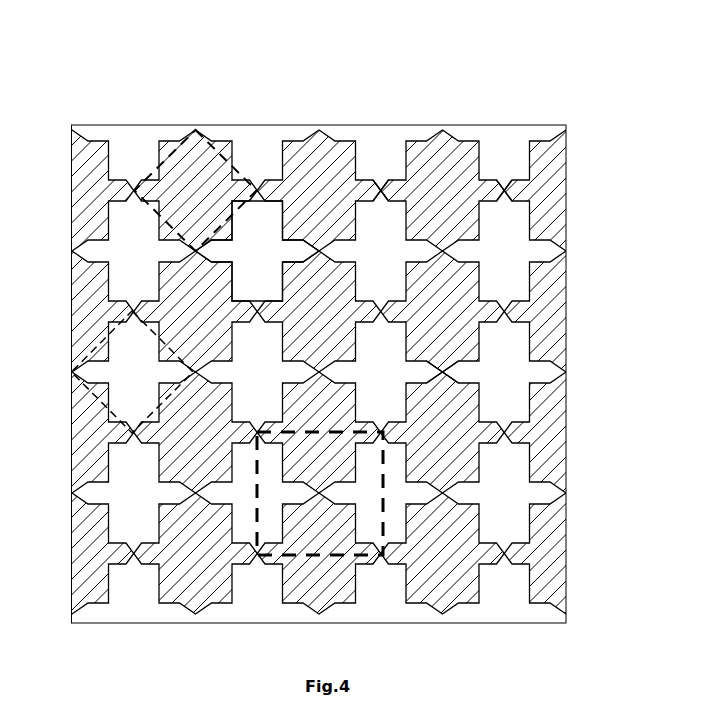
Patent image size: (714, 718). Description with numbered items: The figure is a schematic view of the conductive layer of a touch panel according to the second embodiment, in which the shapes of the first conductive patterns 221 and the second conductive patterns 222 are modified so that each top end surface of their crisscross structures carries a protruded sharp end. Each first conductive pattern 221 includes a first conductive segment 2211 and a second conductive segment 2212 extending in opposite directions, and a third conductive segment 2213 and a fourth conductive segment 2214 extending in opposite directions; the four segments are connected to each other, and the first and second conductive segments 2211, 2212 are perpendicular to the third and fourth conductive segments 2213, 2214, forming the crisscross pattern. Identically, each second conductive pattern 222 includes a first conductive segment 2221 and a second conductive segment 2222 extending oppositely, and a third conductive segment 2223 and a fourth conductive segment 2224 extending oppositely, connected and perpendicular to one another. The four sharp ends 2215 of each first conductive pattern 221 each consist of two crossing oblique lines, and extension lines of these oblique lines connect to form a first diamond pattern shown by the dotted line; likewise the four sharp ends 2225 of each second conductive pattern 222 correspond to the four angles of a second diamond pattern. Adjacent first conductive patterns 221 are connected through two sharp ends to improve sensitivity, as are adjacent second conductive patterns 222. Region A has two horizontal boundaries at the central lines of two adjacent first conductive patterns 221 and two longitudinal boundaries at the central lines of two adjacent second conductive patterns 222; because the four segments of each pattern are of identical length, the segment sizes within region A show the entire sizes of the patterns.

The first conductive pattern 221 is at (193, 181).
The second conductive pattern 222 is at (266, 251).
The first conductive segment 2211 is at (442, 161).
The second conductive segment 2212 is at (448, 225).
The third conductive segment 2213 is at (406, 187).
The fourth conductive segment 2214 is at (487, 191).
The sharp end 2215 is at (188, 122).
The first conductive segment 2221 is at (513, 333).
The second conductive segment 2222 is at (508, 403).
The third conductive segment 2223 is at (456, 366).
The fourth conductive segment 2224 is at (543, 372).
The sharp end 2225 is at (128, 318).
The region A is at (383, 511).